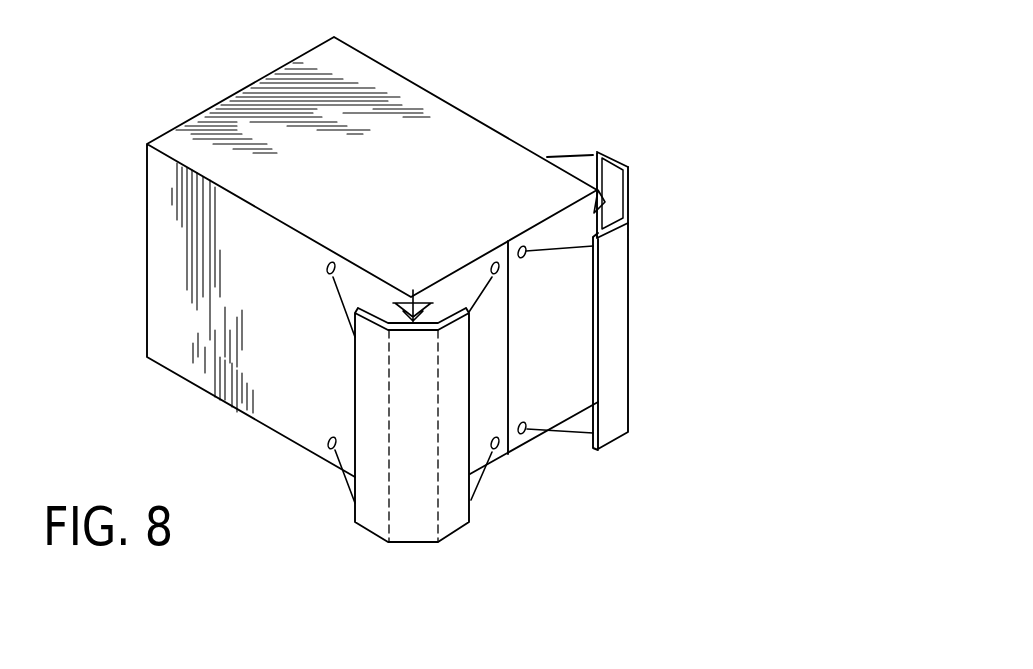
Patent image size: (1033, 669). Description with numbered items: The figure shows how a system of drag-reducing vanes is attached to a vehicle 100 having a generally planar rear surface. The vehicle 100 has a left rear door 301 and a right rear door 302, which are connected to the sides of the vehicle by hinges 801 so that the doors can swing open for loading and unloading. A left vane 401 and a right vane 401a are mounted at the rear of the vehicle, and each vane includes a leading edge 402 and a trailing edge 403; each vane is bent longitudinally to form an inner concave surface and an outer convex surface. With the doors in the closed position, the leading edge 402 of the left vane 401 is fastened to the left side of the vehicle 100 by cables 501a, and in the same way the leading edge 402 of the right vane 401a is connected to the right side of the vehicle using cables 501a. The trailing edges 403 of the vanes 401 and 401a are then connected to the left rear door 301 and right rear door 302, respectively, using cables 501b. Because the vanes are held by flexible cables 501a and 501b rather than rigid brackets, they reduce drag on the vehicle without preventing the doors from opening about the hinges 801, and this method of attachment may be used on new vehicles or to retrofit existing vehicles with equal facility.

The vehicle 100 is at (457, 100).
The left rear door 301 is at (502, 458).
The right rear door 302 is at (524, 435).
The left vane 401 is at (412, 530).
The right vane 401a is at (633, 350).
The leading edge 402 is at (597, 152).
The trailing edge 403 is at (596, 343).
The cables 501a is at (567, 157).
The cables 501b is at (540, 250).
The hinges 801 is at (412, 298).